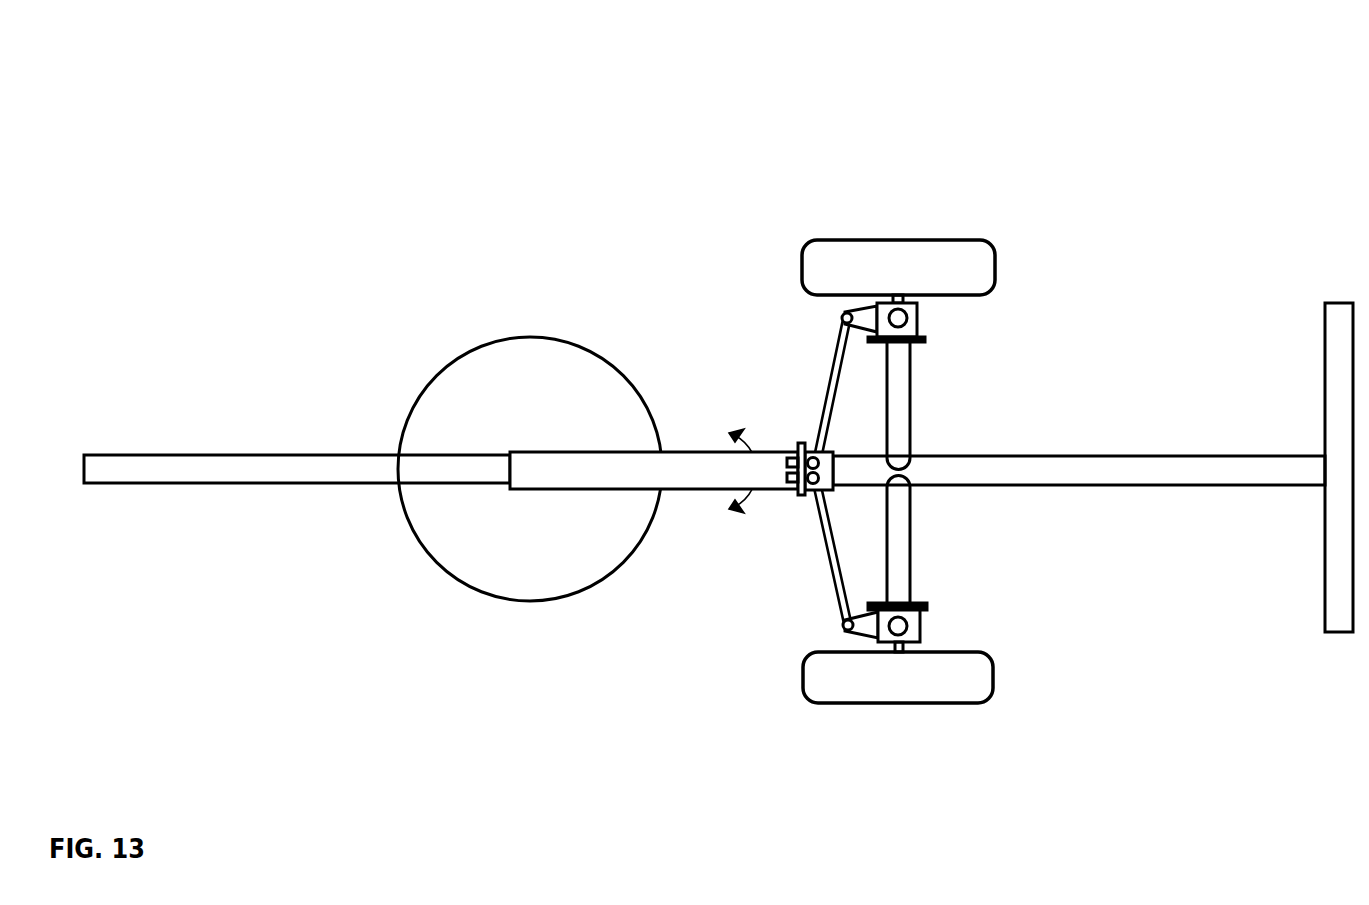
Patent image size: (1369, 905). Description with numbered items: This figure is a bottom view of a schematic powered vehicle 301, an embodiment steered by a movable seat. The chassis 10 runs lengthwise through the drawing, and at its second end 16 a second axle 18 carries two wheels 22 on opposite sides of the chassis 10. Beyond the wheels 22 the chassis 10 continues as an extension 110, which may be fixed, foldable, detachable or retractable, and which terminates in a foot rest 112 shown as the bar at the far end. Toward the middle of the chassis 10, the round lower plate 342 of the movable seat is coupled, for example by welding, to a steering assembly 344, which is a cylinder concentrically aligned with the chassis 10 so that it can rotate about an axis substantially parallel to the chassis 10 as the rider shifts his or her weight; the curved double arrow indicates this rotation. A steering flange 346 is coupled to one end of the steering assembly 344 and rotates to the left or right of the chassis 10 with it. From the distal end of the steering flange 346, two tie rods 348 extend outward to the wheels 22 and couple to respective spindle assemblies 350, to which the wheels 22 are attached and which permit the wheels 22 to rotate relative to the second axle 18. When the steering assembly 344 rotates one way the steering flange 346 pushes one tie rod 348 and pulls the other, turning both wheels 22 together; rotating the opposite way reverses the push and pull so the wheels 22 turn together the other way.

The chassis 10 is at (248, 483).
The second end 16 is at (920, 182).
The second axle 18 is at (980, 474).
The wheels 22 is at (938, 240).
The extension 110 is at (1070, 456).
The foot rest 112 is at (1325, 352).
The powered vehicle 301 is at (828, 100).
The lower plate 342 is at (548, 337).
The steering assembly 344 is at (703, 453).
The steering flange 346 is at (802, 445).
The tie rods 348 is at (830, 363).
The spindle assemblies 350 is at (885, 316).